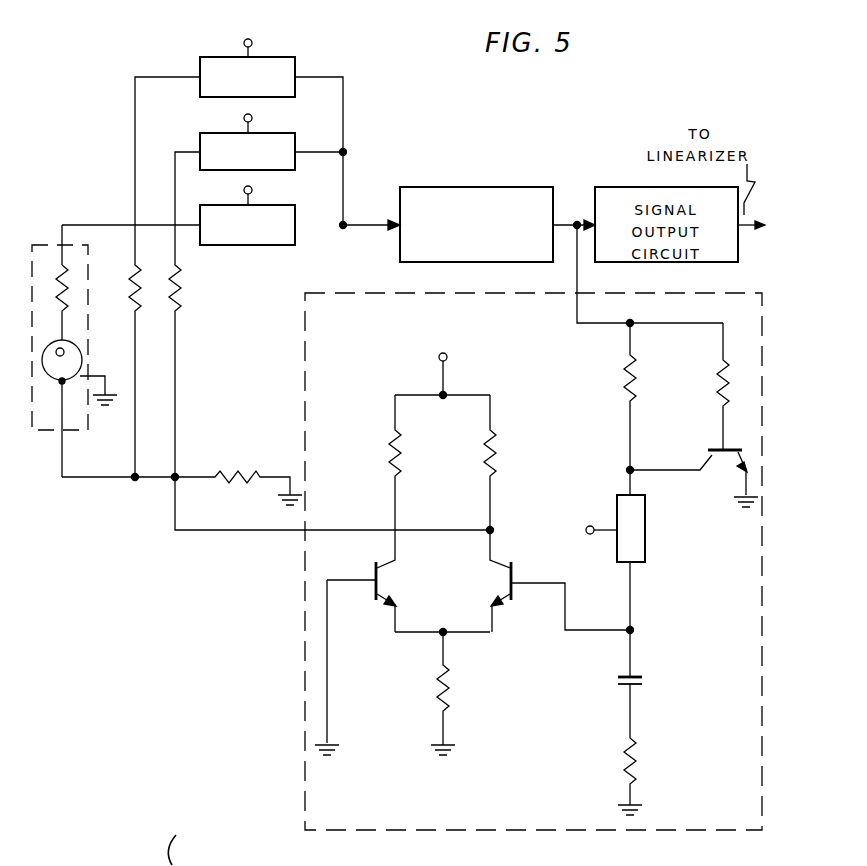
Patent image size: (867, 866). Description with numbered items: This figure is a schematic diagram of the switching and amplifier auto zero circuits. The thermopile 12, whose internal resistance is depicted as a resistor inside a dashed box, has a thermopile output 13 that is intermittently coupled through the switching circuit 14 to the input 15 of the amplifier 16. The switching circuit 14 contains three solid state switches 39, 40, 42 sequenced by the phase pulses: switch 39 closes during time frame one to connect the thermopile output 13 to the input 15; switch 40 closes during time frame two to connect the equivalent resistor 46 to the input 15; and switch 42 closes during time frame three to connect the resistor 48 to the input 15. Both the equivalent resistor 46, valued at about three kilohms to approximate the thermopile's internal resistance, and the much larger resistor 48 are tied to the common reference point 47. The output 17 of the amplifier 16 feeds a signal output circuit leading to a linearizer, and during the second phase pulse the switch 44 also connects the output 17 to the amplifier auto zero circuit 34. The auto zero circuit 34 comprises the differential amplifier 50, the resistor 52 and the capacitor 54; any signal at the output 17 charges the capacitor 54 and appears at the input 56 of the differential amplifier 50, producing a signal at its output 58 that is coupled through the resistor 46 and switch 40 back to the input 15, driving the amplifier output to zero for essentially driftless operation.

The thermopile 12 is at (40, 433).
The thermopile output 13 is at (62, 245).
The switching circuit 14 is at (310, 46).
The amplifier input 15 is at (396, 220).
The amplifier 16 is at (470, 187).
The amplifier output 17 is at (565, 215).
The amplifier auto zero circuit 34 is at (296, 621).
The switch 39 is at (255, 245).
The switch 40 is at (200, 142).
The switch 42 is at (200, 62).
The switch 44 is at (645, 524).
The equivalent resistor 46 is at (178, 308).
The common reference point 47 is at (178, 474).
The resistor 48 is at (135, 302).
The differential amplifier 50 is at (472, 658).
The resistor 52 is at (637, 766).
The capacitor 54 is at (645, 683).
The differential amplifier input 56 is at (518, 600).
The differential amplifier output 58 is at (494, 527).